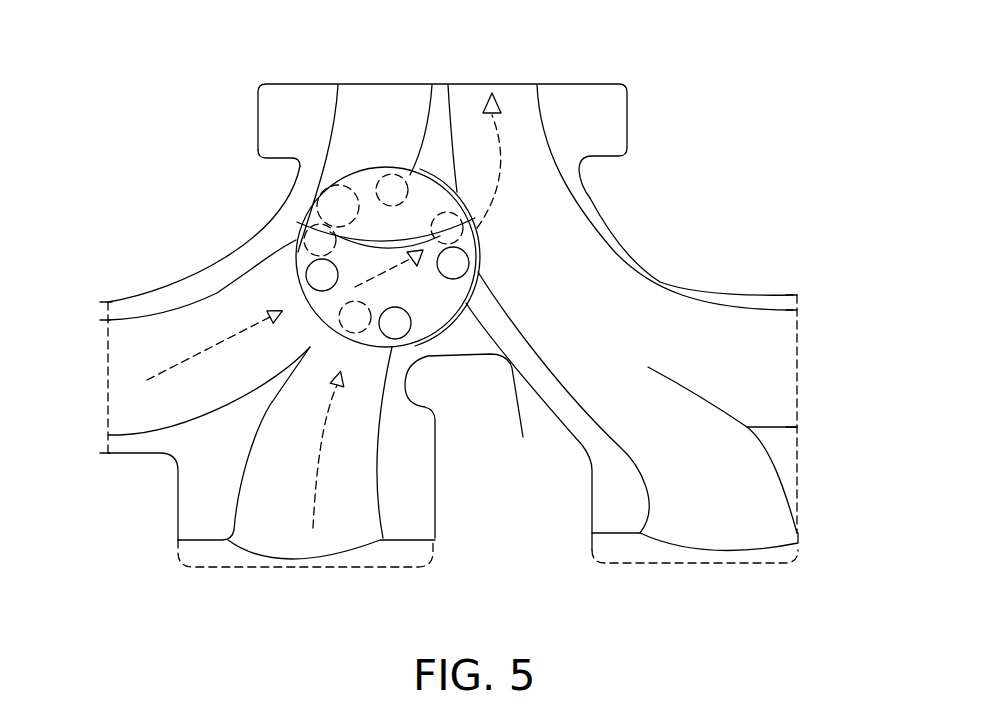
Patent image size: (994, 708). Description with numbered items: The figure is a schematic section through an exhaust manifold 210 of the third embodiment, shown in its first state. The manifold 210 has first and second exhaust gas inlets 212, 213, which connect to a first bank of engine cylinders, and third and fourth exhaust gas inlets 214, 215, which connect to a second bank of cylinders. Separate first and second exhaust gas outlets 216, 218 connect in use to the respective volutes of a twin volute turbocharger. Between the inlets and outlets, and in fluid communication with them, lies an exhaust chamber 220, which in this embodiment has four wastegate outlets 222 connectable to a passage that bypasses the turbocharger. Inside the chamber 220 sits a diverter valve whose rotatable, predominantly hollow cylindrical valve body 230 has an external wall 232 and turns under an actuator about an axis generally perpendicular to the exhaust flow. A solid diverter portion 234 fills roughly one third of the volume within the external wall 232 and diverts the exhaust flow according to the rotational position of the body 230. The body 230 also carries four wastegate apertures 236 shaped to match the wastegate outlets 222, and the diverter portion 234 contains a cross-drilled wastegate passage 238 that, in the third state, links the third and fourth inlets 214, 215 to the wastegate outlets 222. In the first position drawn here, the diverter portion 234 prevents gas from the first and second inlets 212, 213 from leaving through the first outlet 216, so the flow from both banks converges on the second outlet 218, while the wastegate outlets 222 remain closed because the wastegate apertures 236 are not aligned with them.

The manifold 210 is at (120, 144).
The first exhaust gas inlet 212 is at (140, 403).
The second exhaust gas inlet 213 is at (289, 527).
The third exhaust gas inlet 214 is at (710, 532).
The fourth exhaust gas inlet 215 is at (775, 355).
The first exhaust gas outlet 216 is at (360, 107).
The second exhaust gas outlet 218 is at (525, 103).
The exhaust chamber 220 is at (452, 358).
The wastegate outlets 222 is at (435, 214).
The valve body 230 is at (298, 239).
The external wall 232 is at (477, 242).
The diverter portion 234 is at (360, 178).
The wastegate apertures 236 is at (303, 292).
The wastegate passage 238 is at (358, 224).